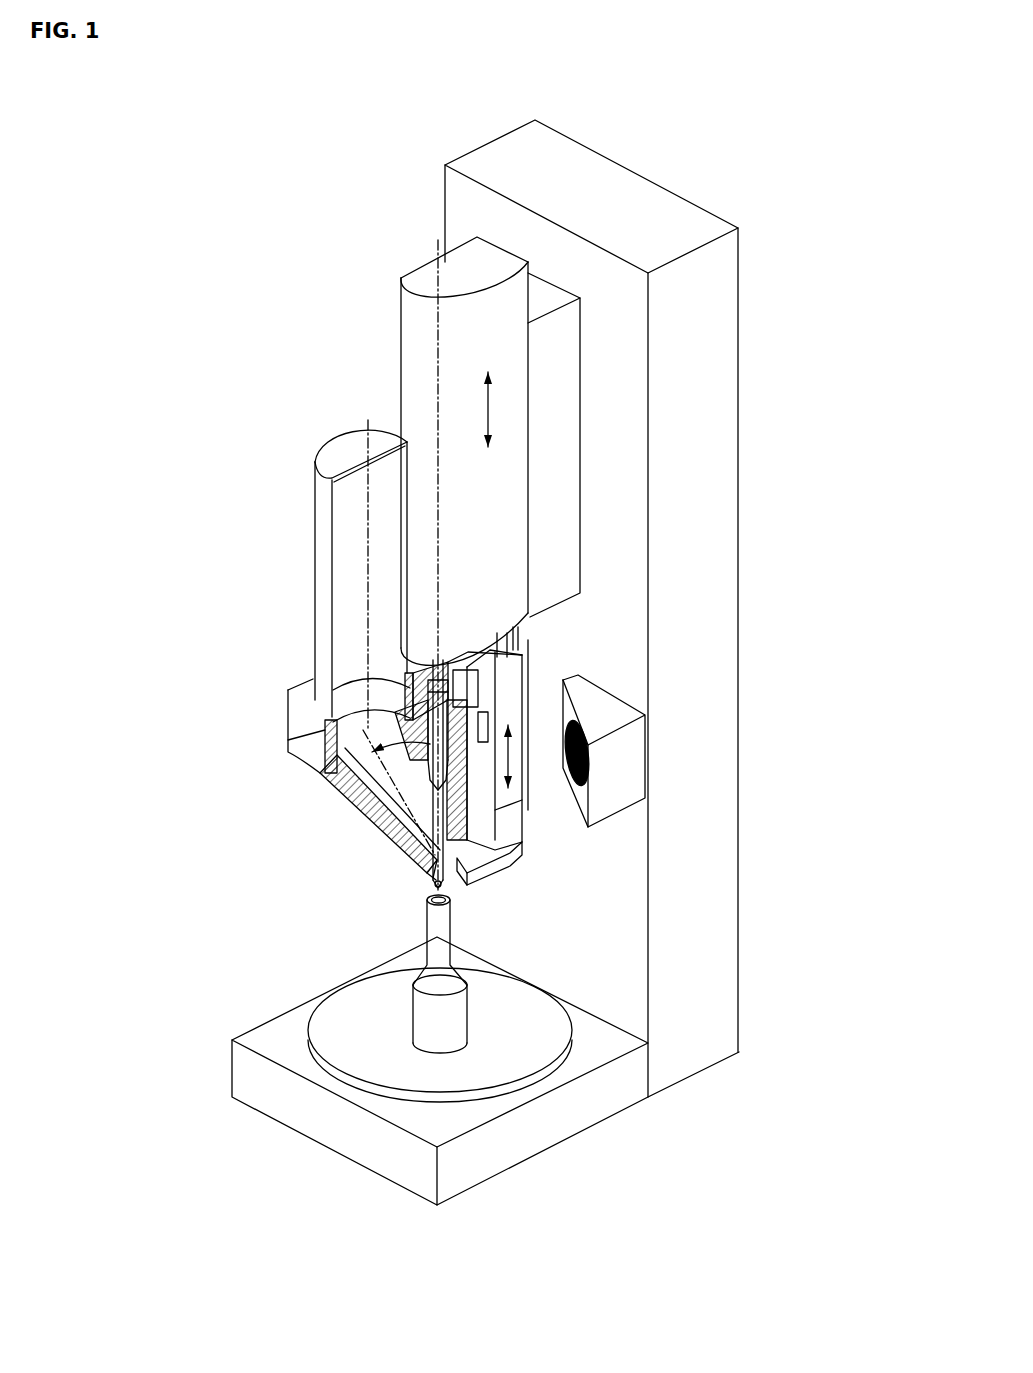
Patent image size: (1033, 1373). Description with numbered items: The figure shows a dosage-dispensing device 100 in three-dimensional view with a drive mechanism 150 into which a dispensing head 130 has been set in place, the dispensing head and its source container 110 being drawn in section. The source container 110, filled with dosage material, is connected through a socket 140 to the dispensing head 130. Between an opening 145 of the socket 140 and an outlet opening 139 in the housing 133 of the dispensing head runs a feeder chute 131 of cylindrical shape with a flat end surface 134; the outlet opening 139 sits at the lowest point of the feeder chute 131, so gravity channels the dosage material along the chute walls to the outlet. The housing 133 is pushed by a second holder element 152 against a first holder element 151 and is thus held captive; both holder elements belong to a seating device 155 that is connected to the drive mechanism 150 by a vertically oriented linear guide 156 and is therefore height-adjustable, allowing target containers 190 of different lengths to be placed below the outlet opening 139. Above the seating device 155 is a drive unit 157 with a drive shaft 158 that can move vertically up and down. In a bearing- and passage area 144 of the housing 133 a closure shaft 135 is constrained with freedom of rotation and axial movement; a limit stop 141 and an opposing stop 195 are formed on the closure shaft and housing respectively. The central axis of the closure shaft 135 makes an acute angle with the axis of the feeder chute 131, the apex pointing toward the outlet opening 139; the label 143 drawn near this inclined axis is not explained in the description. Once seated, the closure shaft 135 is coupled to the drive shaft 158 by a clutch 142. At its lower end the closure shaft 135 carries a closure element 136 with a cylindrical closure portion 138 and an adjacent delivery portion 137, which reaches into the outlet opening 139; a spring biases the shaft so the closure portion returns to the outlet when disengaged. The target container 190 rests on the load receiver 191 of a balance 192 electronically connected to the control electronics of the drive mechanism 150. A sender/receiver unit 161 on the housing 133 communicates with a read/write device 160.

The dosage-dispensing device 100 is at (325, 192).
The source container 110 is at (347, 452).
The dispensing head 130 is at (305, 796).
The feeder chute 131 is at (387, 787).
The housing 133 is at (420, 880).
The flat end surface 134 is at (512, 860).
The closure shaft 135 is at (420, 883).
The closure element 136 is at (455, 882).
The delivery portion 137 is at (425, 877).
The closure portion 138 is at (430, 881).
The outlet opening 139 is at (422, 880).
The socket 140 is at (305, 728).
The limit stop 141 is at (470, 793).
The clutch 142 is at (420, 685).
The inclined channel axis 143 is at (413, 750).
The bearing- and passage area 144 is at (449, 777).
The opening 145 is at (353, 713).
The drive mechanism 150 is at (627, 215).
The first holder element 151 is at (478, 830).
The second holder element 152 is at (530, 660).
The seating device 155 is at (510, 820).
The linear guide 156 is at (523, 633).
The drive unit 157 is at (427, 362).
The drive shaft 158 is at (410, 672).
The read/write device 160 is at (615, 745).
The sender/receiver unit 161 is at (468, 732).
The target container 190 is at (440, 985).
The load receiver 191 is at (428, 1072).
The balance 192 is at (488, 1135).
The opposing stop 195 is at (456, 765).